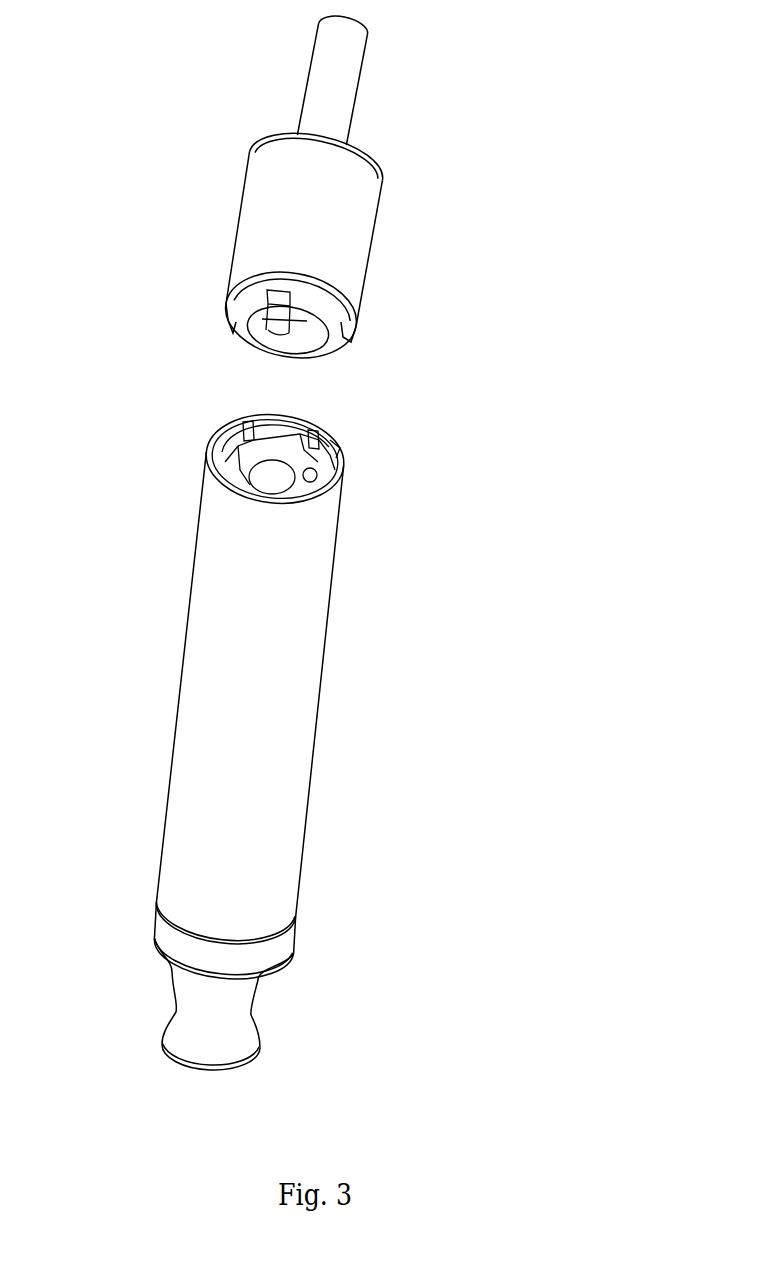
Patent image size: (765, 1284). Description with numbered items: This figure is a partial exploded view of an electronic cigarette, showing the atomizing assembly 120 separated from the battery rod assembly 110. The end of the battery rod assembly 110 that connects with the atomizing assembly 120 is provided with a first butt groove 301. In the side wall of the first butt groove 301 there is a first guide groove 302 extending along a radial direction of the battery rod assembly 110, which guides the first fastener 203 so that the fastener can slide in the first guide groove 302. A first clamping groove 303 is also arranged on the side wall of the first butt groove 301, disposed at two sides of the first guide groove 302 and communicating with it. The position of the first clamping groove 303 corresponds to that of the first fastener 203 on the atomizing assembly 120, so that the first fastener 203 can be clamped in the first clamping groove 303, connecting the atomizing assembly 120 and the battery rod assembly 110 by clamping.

The battery rod assembly 110 is at (322, 730).
The atomizing assembly 120 is at (309, 192).
The first fastener 203 is at (272, 295).
The first butt groove 301 is at (342, 470).
The first guide groove 302 is at (290, 433).
The first clamping groove 303 is at (336, 446).